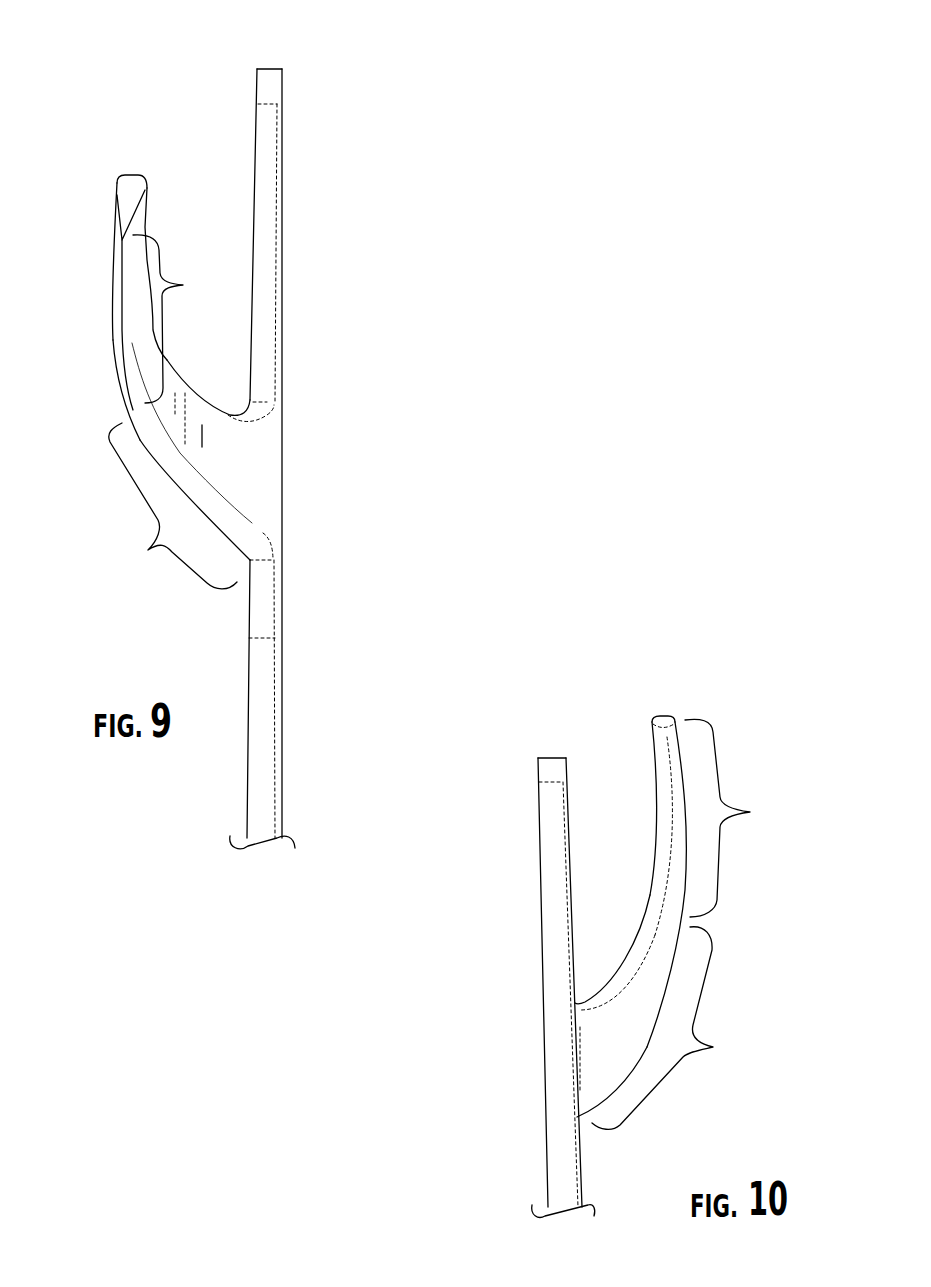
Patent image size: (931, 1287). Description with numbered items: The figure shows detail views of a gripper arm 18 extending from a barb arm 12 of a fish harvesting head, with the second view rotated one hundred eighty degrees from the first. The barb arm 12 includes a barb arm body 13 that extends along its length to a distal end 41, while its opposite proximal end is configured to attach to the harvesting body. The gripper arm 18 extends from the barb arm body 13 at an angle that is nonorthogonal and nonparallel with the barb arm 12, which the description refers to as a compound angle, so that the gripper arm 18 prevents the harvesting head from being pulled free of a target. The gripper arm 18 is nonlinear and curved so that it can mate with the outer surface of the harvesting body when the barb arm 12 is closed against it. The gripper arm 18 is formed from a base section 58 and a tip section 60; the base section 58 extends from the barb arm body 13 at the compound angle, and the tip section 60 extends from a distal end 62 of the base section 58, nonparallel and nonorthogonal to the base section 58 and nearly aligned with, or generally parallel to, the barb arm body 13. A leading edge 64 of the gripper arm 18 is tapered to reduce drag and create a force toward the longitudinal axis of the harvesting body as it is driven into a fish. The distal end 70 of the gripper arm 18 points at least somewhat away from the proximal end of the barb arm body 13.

In FIG. 9, the barb arm 12 is at (283, 262).
In FIG. 10, the barb arm 12 is at (538, 928).
In FIG. 9, the barb arm body 13 is at (283, 342).
In FIG. 10, the barb arm body 13 is at (543, 1025).
In FIG. 9, the gripper arm 18 is at (207, 447).
In FIG. 10, the gripper arm 18 is at (657, 850).
In FIG. 9, the distal end 41 is at (270, 75).
In FIG. 10, the distal end 41 is at (553, 757).
In FIG. 9, the base section 58 is at (191, 466).
In FIG. 10, the base section 58 is at (658, 1028).
In FIG. 9, the tip section 60 is at (172, 295).
In FIG. 10, the tip section 60 is at (713, 883).
In FIG. 9, the distal end of the base section 62 is at (127, 408).
In FIG. 10, the distal end of the base section 62 is at (657, 920).
In FIG. 9, the leading edge 64 is at (116, 242).
In FIG. 9, the distal end of the gripper arm 70 is at (132, 187).
In FIG. 10, the distal end of the gripper arm 70 is at (658, 716).